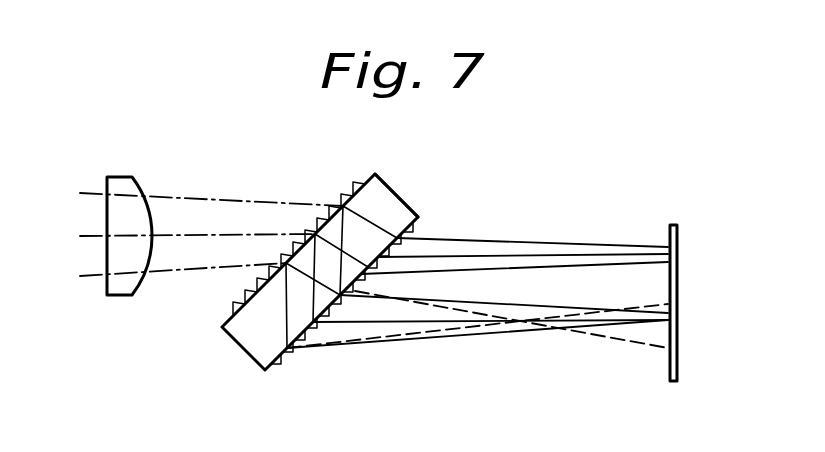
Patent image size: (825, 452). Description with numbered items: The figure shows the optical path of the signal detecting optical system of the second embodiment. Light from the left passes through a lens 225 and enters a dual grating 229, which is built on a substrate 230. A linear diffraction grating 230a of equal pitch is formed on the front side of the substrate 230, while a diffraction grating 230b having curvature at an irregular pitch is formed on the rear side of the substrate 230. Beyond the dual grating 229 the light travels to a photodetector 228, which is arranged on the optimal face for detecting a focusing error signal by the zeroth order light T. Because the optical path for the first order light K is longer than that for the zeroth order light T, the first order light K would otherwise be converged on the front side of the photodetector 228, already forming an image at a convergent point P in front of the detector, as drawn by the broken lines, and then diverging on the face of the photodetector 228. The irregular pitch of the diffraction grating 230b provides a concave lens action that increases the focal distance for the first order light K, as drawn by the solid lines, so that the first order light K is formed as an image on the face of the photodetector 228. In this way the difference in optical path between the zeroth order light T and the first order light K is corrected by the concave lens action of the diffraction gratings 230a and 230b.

The lens 225 is at (130, 177).
The dual grating 229 is at (402, 199).
The substrate 230 is at (243, 340).
The linear diffraction grating 230a is at (342, 193).
The diffraction grating 230b is at (296, 348).
The photodetector 228 is at (679, 272).
The zeroth order light T is at (538, 241).
The first order light K is at (451, 334).
The convergent point P is at (509, 321).